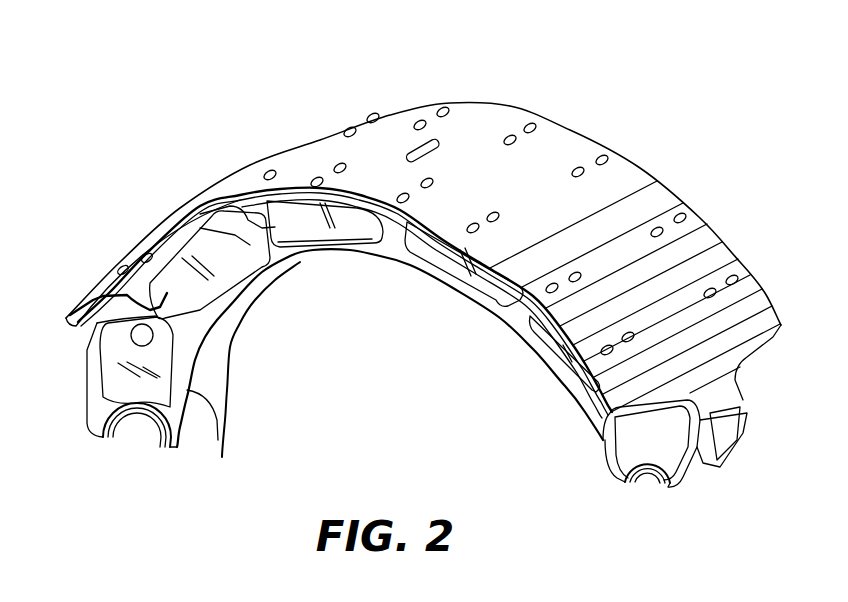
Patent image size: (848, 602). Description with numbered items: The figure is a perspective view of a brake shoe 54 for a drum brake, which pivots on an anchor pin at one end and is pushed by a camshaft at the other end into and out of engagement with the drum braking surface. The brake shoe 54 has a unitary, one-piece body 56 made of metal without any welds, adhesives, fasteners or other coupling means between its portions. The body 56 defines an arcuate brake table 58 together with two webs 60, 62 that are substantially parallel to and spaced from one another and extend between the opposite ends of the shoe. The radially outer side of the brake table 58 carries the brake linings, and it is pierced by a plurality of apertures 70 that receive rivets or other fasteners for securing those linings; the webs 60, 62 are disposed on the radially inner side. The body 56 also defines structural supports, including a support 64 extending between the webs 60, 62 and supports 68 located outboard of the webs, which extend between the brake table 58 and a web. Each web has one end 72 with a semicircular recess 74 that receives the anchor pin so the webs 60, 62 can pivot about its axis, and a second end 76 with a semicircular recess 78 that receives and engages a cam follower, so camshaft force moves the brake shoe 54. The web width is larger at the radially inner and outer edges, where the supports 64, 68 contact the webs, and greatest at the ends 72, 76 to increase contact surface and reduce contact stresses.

The brake shoe 54 is at (262, 103).
The body 56 is at (250, 198).
The brake table 58 is at (583, 160).
The web 60 is at (220, 367).
The web 62 is at (240, 257).
The structural support 64 is at (220, 316).
The structural support 68 is at (123, 316).
The apertures 70 is at (680, 217).
The end 72 is at (205, 463).
The semicircular recess 74 is at (137, 432).
The second end 76 is at (590, 494).
The semicircular recess 78 is at (647, 482).